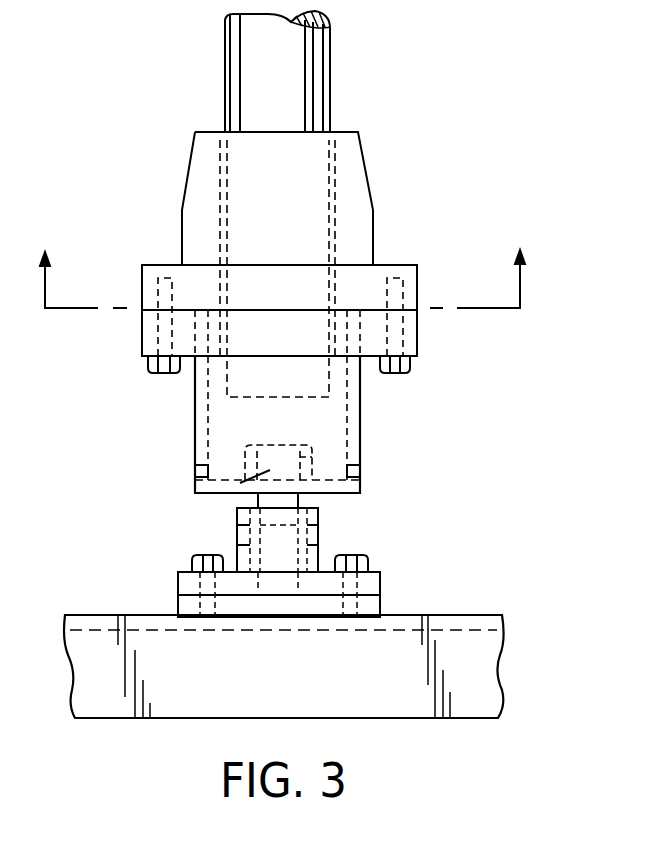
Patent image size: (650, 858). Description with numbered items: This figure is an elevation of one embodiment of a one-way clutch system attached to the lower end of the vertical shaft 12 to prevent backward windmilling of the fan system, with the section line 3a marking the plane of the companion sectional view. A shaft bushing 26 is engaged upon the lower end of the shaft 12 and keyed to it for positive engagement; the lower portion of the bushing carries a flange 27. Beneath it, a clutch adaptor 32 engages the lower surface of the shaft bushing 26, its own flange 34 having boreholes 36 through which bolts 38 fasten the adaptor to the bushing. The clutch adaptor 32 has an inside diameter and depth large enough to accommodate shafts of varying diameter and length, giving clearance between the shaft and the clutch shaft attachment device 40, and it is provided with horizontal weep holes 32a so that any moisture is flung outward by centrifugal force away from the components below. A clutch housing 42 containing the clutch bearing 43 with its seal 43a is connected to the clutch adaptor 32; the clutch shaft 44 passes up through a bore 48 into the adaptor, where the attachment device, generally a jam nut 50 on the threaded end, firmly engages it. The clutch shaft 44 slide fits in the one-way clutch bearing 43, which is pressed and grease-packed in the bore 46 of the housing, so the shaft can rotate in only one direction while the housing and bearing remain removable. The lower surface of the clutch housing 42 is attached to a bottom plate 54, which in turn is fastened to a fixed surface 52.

The vertical shaft 12 is at (292, 58).
The shaft bushing 26 is at (368, 180).
The flange 27 is at (358, 285).
The clutch adaptor 32 is at (362, 430).
The weep holes 32a is at (197, 470).
The flange 34 is at (419, 331).
The boreholes 36 is at (395, 340).
The bolts 38 is at (168, 375).
The clutch shaft attachment device 40 is at (312, 455).
The clutch housing 42 is at (320, 527).
The clutch bearing 43 is at (230, 542).
The seal 43a is at (233, 523).
The clutch shaft 44 is at (298, 500).
The bore 46 is at (320, 540).
The bore 48 is at (360, 482).
The jam nut 50 is at (195, 482).
The fixed surface 52 is at (475, 668).
The bottom plate 54 is at (372, 600).
The section line 3a is at (285, 264).